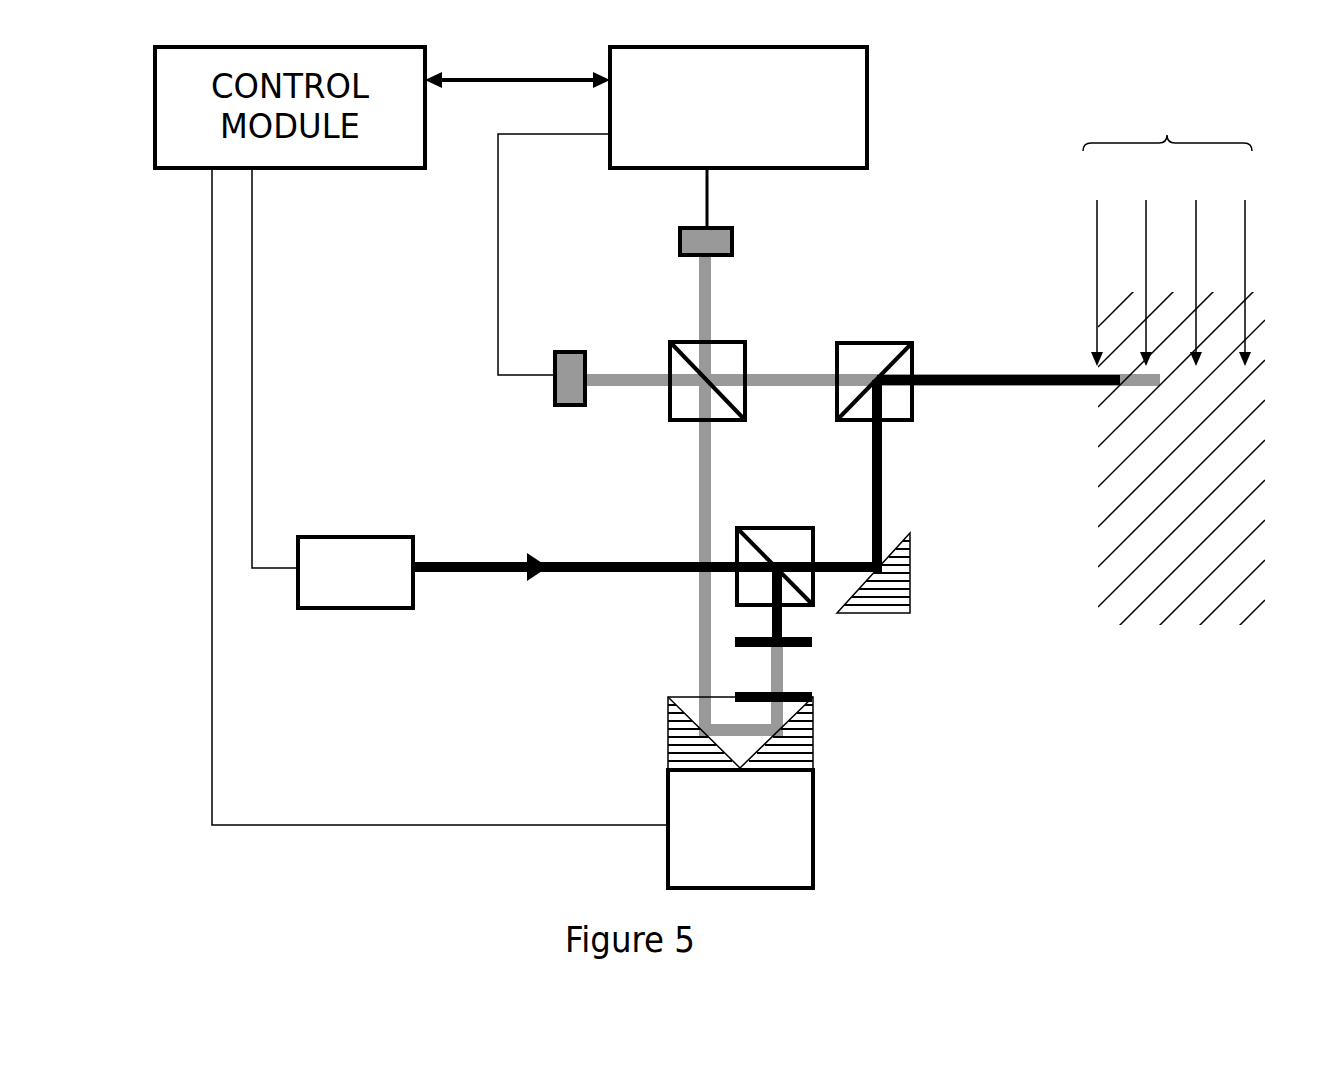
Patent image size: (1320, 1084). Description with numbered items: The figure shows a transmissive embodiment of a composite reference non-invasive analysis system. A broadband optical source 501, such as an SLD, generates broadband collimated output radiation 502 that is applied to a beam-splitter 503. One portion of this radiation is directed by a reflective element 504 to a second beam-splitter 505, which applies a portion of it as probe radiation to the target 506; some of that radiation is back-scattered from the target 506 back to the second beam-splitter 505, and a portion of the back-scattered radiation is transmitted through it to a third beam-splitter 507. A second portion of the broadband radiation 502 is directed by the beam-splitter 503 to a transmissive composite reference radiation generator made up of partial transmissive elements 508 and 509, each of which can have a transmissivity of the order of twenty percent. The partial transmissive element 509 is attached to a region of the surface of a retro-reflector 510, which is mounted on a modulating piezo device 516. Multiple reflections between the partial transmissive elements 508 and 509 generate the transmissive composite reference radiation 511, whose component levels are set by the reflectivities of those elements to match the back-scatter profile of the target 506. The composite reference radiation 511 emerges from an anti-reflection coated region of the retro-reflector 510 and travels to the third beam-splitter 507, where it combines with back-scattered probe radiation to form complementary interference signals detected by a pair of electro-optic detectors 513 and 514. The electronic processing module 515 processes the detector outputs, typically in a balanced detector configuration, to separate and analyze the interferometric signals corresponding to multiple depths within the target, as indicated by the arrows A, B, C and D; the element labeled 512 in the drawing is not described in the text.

The broadband optical source 501 is at (365, 617).
The broadband collimated output radiation 502 is at (522, 580).
The beam-splitter 503 is at (797, 520).
The reflective element 504 is at (912, 557).
The second beam-splitter 505 is at (920, 408).
The target 506 is at (1010, 370).
The third beam-splitter 507 is at (740, 335).
The partial transmissive element 508 is at (818, 642).
The partial transmissive element 509 is at (818, 690).
The retro-reflector 510 is at (818, 735).
The transmissive composite reference radiation 511 is at (698, 606).
The detector assembly 512 is at (680, 692).
The electro-optic detector 513 is at (680, 240).
The electro-optic detector 514 is at (548, 393).
The electronic processing module 515 is at (875, 75).
The modulating piezo device 516 is at (818, 858).